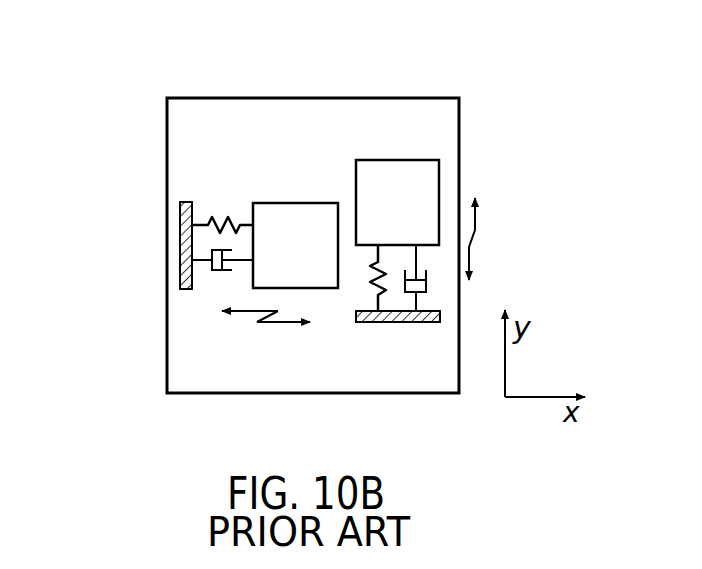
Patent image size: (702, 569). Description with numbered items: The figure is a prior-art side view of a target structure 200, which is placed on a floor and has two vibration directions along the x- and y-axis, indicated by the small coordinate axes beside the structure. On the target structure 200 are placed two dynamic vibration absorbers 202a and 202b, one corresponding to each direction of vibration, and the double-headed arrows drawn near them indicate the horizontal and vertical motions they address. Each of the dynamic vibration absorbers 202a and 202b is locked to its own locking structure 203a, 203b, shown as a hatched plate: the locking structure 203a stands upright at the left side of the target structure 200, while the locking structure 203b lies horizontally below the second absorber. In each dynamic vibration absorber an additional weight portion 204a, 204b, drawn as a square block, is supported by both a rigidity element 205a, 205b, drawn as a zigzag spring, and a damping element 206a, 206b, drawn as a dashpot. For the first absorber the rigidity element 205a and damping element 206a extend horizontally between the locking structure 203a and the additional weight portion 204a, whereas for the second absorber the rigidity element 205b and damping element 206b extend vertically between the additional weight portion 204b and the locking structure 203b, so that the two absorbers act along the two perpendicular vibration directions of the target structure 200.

The target structure 200 is at (167, 113).
The dynamic vibration absorber 202a is at (265, 173).
The dynamic vibration absorber 202b is at (390, 138).
The locking structure 203a is at (180, 260).
The locking structure 203b is at (410, 323).
The additional weight portion 204a is at (298, 203).
The additional weight portion 204b is at (437, 160).
The rigidity element 205a is at (220, 215).
The rigidity element 205b is at (372, 282).
The damping element 206a is at (214, 272).
The damping element 206b is at (426, 285).